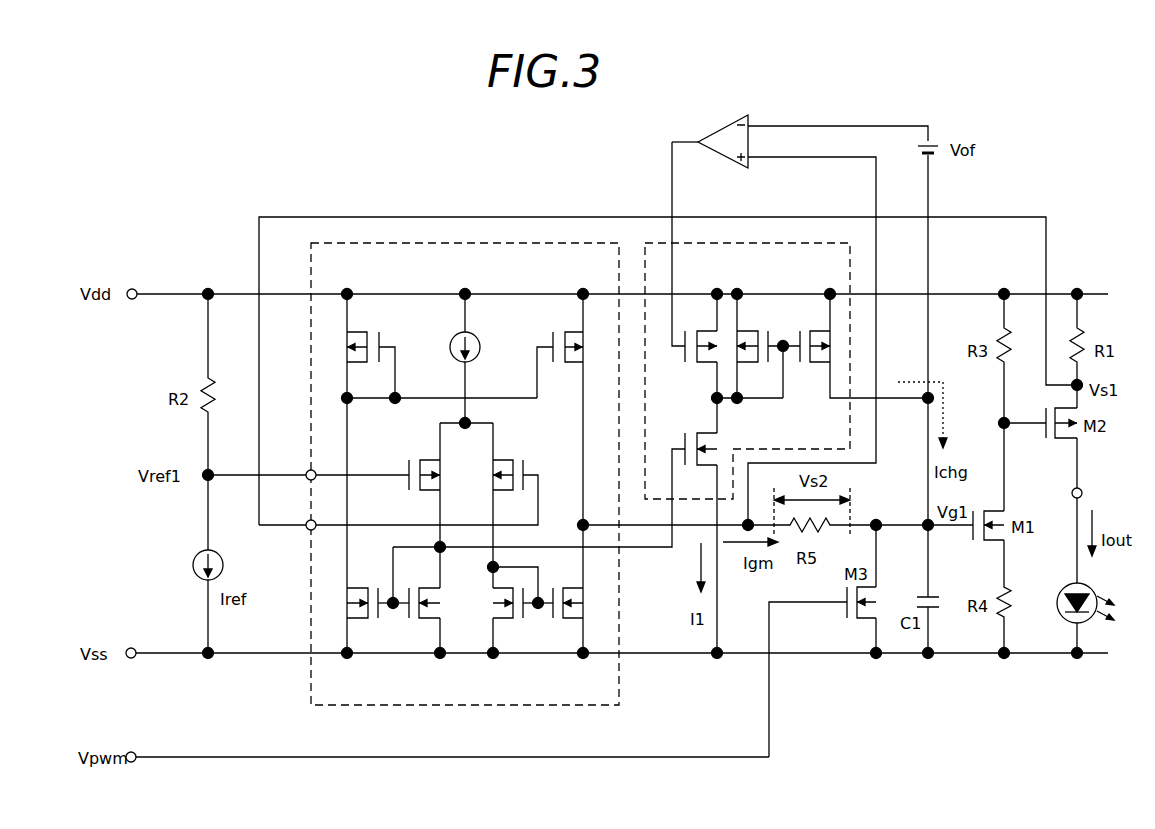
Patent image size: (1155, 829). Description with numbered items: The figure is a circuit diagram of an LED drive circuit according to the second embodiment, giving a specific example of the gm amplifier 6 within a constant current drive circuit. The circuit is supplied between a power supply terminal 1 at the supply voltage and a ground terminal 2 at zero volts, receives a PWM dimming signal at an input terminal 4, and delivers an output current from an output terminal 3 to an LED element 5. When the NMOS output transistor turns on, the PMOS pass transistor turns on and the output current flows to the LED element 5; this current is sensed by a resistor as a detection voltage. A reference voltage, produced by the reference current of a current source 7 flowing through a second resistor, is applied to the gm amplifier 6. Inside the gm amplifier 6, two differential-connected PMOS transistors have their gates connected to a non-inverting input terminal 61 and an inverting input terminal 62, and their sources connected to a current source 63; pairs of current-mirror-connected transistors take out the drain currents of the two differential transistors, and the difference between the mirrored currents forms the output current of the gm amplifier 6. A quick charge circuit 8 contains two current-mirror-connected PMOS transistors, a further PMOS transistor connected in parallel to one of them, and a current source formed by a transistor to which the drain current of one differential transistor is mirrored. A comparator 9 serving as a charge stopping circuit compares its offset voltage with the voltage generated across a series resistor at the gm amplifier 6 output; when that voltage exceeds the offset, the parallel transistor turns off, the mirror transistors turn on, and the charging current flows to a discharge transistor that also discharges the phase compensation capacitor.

The power supply terminal 1 is at (134, 289).
The ground terminal 2 is at (132, 648).
The output terminal 3 is at (1083, 493).
The input terminal of a PWM signal 4 is at (133, 752).
The LED element 5 is at (1096, 586).
The gm amplifier 6 is at (469, 243).
The current source 7 is at (193, 565).
The quick charge circuit 8 is at (737, 243).
The comparator 9 is at (718, 130).
The non-inverting input terminal 61 is at (306, 528).
The inverting input terminal 62 is at (306, 472).
The current source 63 is at (481, 348).